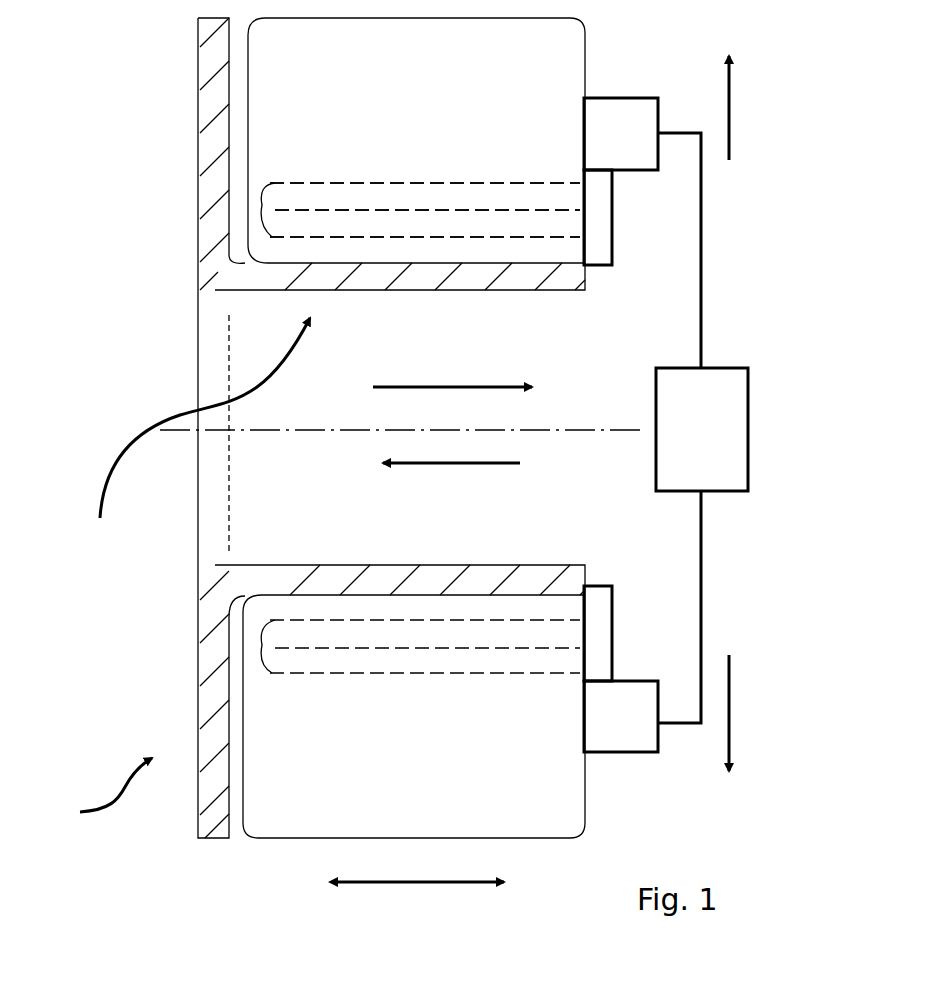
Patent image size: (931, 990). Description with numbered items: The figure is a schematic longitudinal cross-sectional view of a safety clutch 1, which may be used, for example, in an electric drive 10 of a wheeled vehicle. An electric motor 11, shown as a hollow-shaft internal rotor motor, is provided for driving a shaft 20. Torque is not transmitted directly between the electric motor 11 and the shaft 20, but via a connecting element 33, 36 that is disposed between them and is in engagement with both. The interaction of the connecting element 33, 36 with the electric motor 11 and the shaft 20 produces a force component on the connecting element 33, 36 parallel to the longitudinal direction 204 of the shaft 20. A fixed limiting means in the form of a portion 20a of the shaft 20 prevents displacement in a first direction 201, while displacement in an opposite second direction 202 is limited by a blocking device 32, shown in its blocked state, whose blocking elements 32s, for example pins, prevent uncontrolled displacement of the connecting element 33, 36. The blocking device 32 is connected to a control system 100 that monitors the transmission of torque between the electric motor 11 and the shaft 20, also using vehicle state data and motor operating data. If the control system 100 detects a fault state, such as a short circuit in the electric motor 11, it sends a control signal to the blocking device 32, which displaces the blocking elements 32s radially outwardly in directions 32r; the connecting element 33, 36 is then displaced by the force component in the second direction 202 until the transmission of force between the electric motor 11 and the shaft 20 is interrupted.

The safety clutch 1 is at (199, 433).
The electric drive 10 is at (97, 798).
The electric motor 11 is at (412, 148).
The shaft 20 is at (275, 281).
The portion of shaft 20a is at (215, 60).
The blocking device 32 is at (636, 148).
The blocking elements 32s is at (600, 215).
The directions 32r is at (729, 100).
The connecting element 33 is at (282, 218).
The connecting element 36 is at (425, 210).
The control system 100 is at (726, 442).
The first direction 201 is at (427, 466).
The second direction 202 is at (427, 385).
The longitudinal direction 204 is at (386, 884).